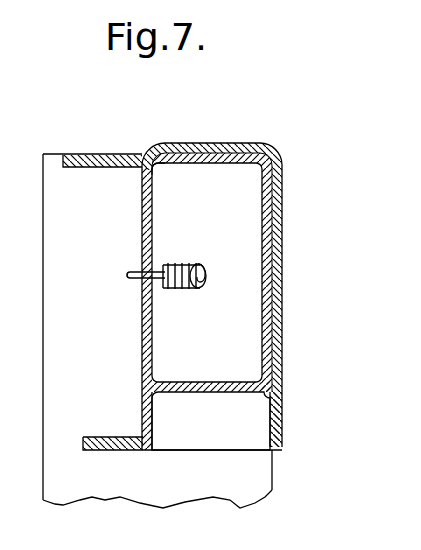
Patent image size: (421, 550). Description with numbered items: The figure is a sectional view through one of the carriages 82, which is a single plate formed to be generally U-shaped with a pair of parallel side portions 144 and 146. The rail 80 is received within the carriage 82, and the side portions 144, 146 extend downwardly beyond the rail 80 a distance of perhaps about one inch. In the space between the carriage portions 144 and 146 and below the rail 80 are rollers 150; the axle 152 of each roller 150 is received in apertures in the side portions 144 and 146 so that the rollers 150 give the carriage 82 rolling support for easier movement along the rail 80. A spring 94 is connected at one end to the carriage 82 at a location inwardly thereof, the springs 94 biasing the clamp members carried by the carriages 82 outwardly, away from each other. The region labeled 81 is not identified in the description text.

The rail 80 is at (212, 382).
The inner corner of channel 81 is at (153, 180).
The carriage 82 is at (218, 143).
The spring 94 is at (191, 262).
The side portion 144 is at (282, 200).
The side portion 146 is at (142, 223).
The roller 150 is at (220, 427).
The axle 152 is at (282, 410).